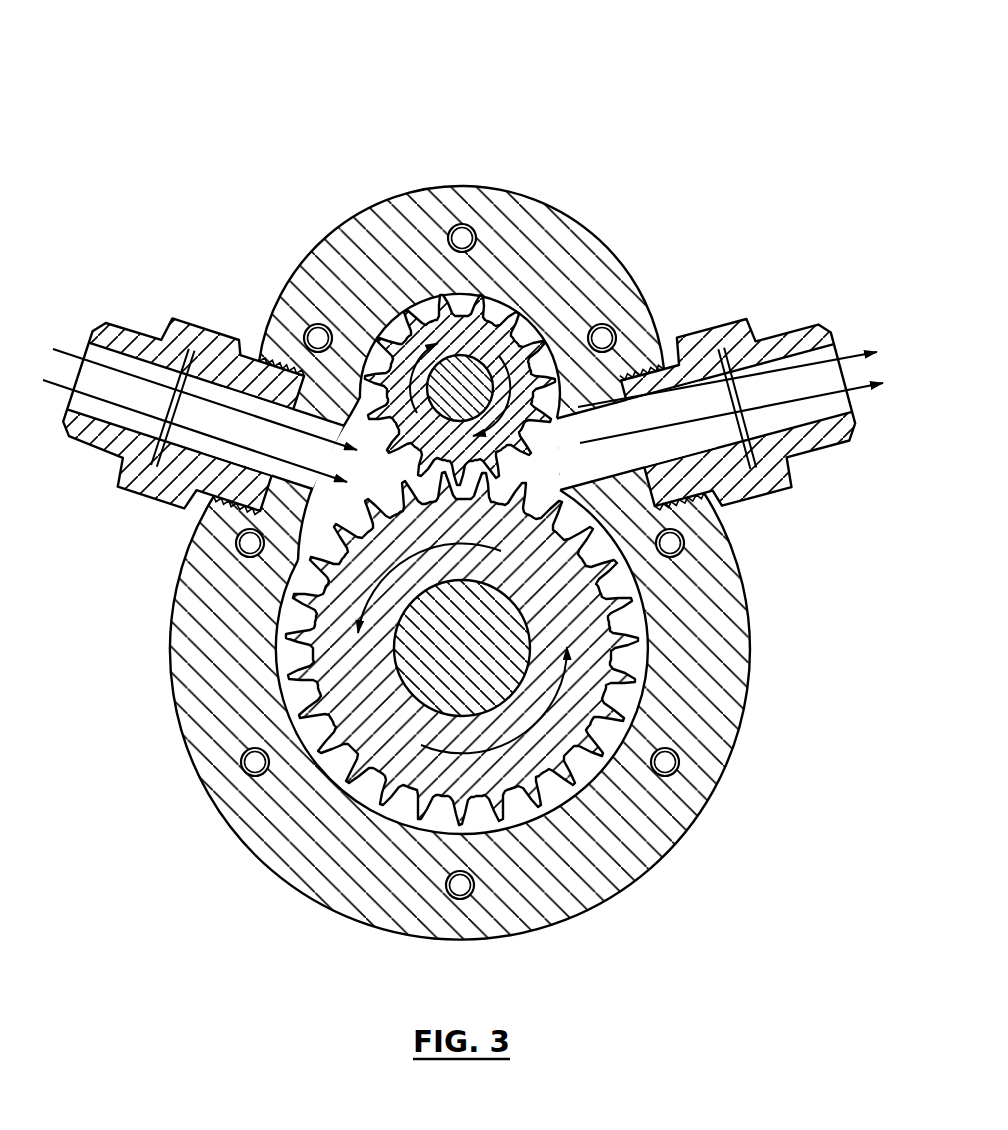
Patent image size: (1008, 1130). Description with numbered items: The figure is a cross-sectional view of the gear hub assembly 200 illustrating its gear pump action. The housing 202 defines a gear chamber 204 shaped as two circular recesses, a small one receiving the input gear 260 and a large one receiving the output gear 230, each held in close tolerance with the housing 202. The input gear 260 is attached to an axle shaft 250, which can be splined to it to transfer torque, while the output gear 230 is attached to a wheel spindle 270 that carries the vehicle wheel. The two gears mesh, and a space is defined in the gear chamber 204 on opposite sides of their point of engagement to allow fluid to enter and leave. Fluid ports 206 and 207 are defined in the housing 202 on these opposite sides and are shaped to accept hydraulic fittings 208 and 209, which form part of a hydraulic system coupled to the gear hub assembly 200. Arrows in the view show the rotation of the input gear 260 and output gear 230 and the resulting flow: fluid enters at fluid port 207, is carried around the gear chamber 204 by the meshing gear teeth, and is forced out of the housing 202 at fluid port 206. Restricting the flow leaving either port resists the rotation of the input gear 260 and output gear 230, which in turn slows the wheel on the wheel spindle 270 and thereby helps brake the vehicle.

The gear hub assembly 200 is at (542, 126).
The housing 202 is at (562, 212).
The gear chamber 204 is at (638, 662).
The fluid port 206 is at (723, 497).
The fluid port 207 is at (205, 502).
The hydraulic fitting 208 is at (722, 325).
The hydraulic fitting 209 is at (142, 493).
The output gear 230 is at (634, 615).
The axle shaft 250 is at (483, 402).
The input gear 260 is at (533, 318).
The wheel spindle 270 is at (485, 662).